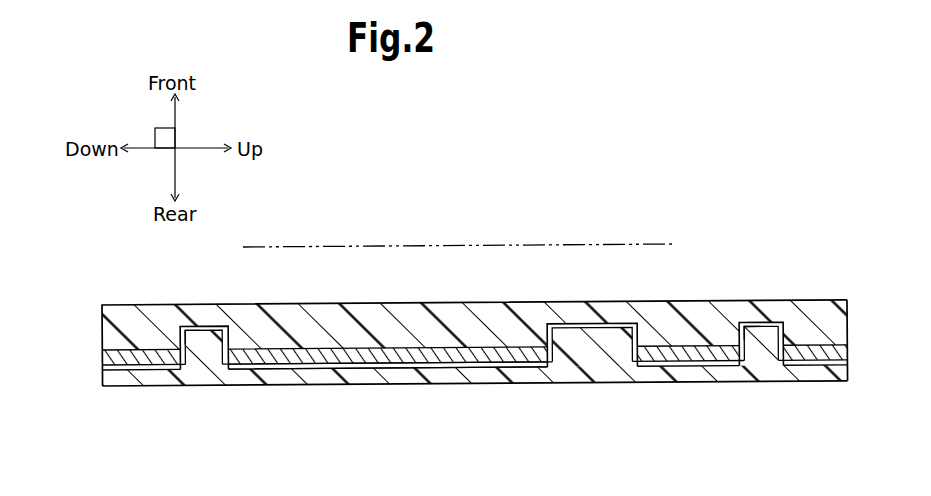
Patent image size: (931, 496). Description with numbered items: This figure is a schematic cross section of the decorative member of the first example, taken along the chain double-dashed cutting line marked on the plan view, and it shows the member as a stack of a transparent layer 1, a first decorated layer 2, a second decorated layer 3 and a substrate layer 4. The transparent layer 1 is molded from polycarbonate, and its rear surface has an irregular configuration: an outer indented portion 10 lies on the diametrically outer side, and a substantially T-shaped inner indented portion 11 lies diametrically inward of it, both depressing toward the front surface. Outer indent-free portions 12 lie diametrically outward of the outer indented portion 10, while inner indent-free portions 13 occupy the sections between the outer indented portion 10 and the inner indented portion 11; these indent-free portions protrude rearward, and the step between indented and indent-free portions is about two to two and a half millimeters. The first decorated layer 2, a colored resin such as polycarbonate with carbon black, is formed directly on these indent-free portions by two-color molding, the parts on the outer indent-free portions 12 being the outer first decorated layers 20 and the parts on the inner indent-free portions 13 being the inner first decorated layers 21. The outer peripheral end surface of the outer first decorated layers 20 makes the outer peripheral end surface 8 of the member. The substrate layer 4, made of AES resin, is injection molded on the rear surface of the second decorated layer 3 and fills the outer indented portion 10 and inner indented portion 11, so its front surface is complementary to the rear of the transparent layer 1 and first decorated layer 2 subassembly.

The transparent layer 1 is at (694, 318).
The first decorated layer 2 is at (459, 242).
The outer first decorated layers 20 is at (797, 338).
The inner first decorated layers 21 is at (356, 353).
The second decorated layer 3 is at (290, 369).
The substrate layer 4 is at (590, 375).
The outer peripheral end surface 8 is at (847, 329).
The outer indented portion 10 is at (195, 344).
The inner indented portion 11 is at (624, 344).
The outer indent-free portions 12 is at (126, 381).
The inner indent-free portions 13 is at (472, 377).